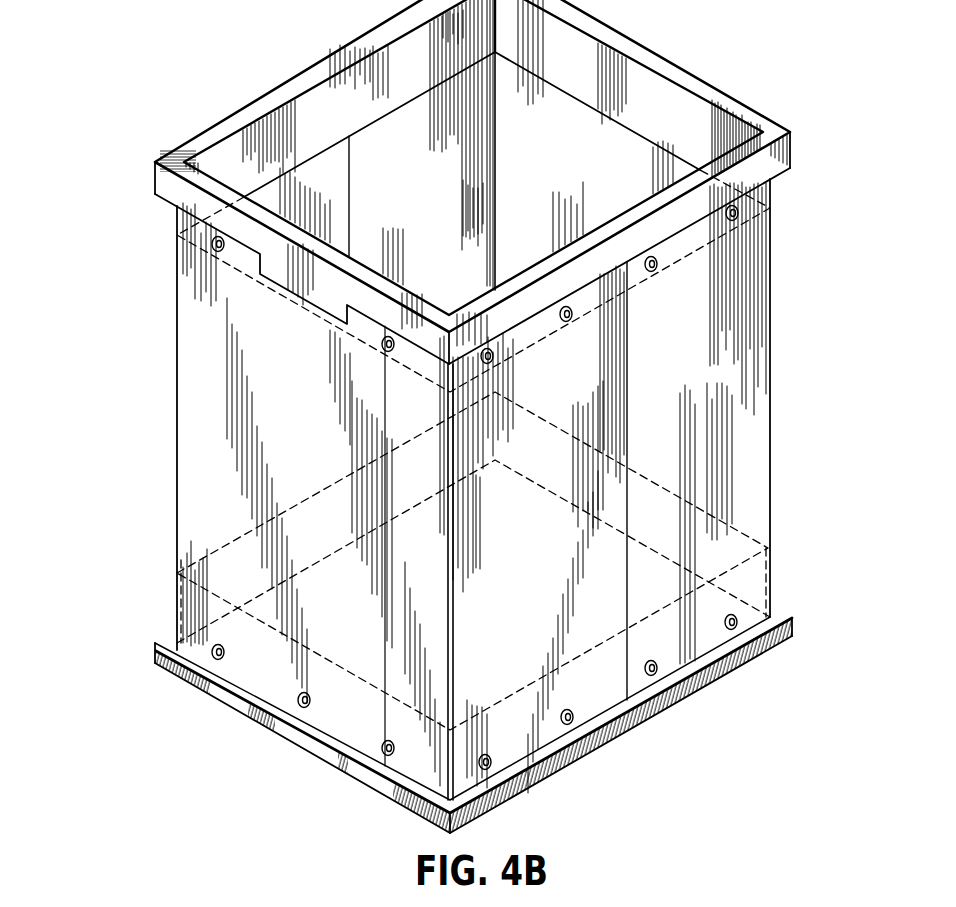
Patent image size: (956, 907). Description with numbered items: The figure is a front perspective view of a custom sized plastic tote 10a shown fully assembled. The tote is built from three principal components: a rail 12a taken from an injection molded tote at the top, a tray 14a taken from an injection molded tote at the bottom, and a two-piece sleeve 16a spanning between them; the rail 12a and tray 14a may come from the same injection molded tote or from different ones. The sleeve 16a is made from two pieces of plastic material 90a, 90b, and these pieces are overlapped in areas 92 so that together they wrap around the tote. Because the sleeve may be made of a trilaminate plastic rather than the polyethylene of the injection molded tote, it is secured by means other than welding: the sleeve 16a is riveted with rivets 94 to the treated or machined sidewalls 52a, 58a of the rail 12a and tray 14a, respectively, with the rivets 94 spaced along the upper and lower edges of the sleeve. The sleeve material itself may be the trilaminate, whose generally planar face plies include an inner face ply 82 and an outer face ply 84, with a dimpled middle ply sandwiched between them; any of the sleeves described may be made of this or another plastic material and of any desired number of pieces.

The custom sized plastic tote 10a is at (446, 416).
The rail 12a is at (278, 83).
The tray 14a is at (153, 637).
The two-piece sleeve 16a is at (174, 392).
The sidewall of the rail 52a is at (637, 122).
The sidewall of the tray 58a is at (202, 557).
The inner face ply 82 is at (443, 233).
The outer face ply 84 is at (535, 549).
The piece of plastic material 90a is at (180, 455).
The piece of plastic material 90b is at (765, 410).
The overlap areas 92 is at (359, 163).
The rivets 94 is at (381, 350).